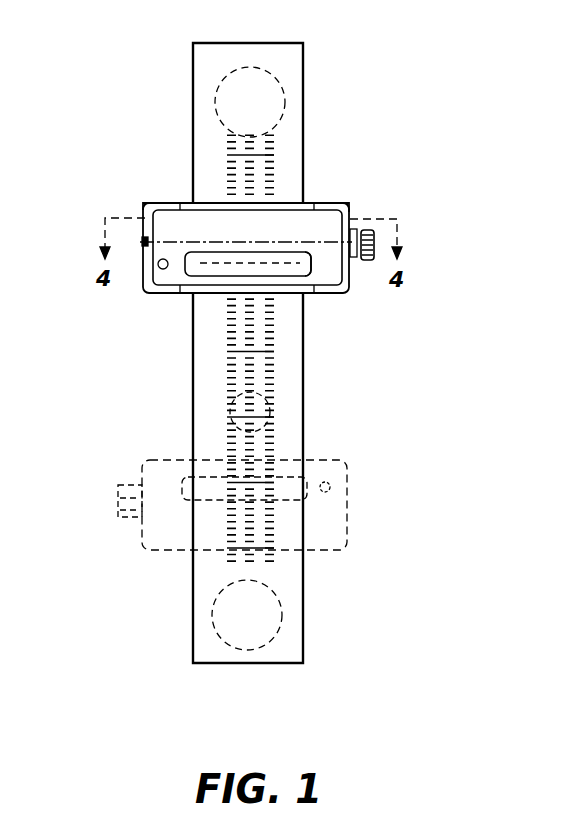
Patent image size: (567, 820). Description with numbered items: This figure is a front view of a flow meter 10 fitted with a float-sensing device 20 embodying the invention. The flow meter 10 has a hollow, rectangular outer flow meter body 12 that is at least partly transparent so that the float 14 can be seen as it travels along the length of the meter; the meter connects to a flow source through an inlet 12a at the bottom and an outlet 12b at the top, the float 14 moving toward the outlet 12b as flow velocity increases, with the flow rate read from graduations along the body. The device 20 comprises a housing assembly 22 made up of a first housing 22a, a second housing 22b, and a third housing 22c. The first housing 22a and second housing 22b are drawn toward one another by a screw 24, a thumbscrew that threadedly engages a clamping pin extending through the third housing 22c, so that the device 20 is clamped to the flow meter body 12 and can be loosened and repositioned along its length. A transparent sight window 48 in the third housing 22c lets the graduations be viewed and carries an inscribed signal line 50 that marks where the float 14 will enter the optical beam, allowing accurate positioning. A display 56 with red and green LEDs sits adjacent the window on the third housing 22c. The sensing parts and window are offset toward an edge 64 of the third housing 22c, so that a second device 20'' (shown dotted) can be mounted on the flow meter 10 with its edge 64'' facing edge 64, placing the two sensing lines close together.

The flow meter 10 is at (313, 393).
The flow meter body 12 is at (193, 595).
The inlet 12a is at (268, 636).
The outlet 12b is at (258, 68).
The float 14 is at (232, 408).
The device 20 is at (286, 213).
The second device 20'' is at (295, 489).
The housing assembly 22 is at (143, 203).
The first housing 22a is at (352, 205).
The second housing 22b is at (168, 202).
The third housing 22c is at (258, 200).
The screw 24 is at (366, 262).
The sight window 48 is at (312, 275).
The signal line 50 is at (207, 263).
The display 56 is at (160, 268).
The edge 64 is at (205, 318).
The edge 64'' is at (115, 478).